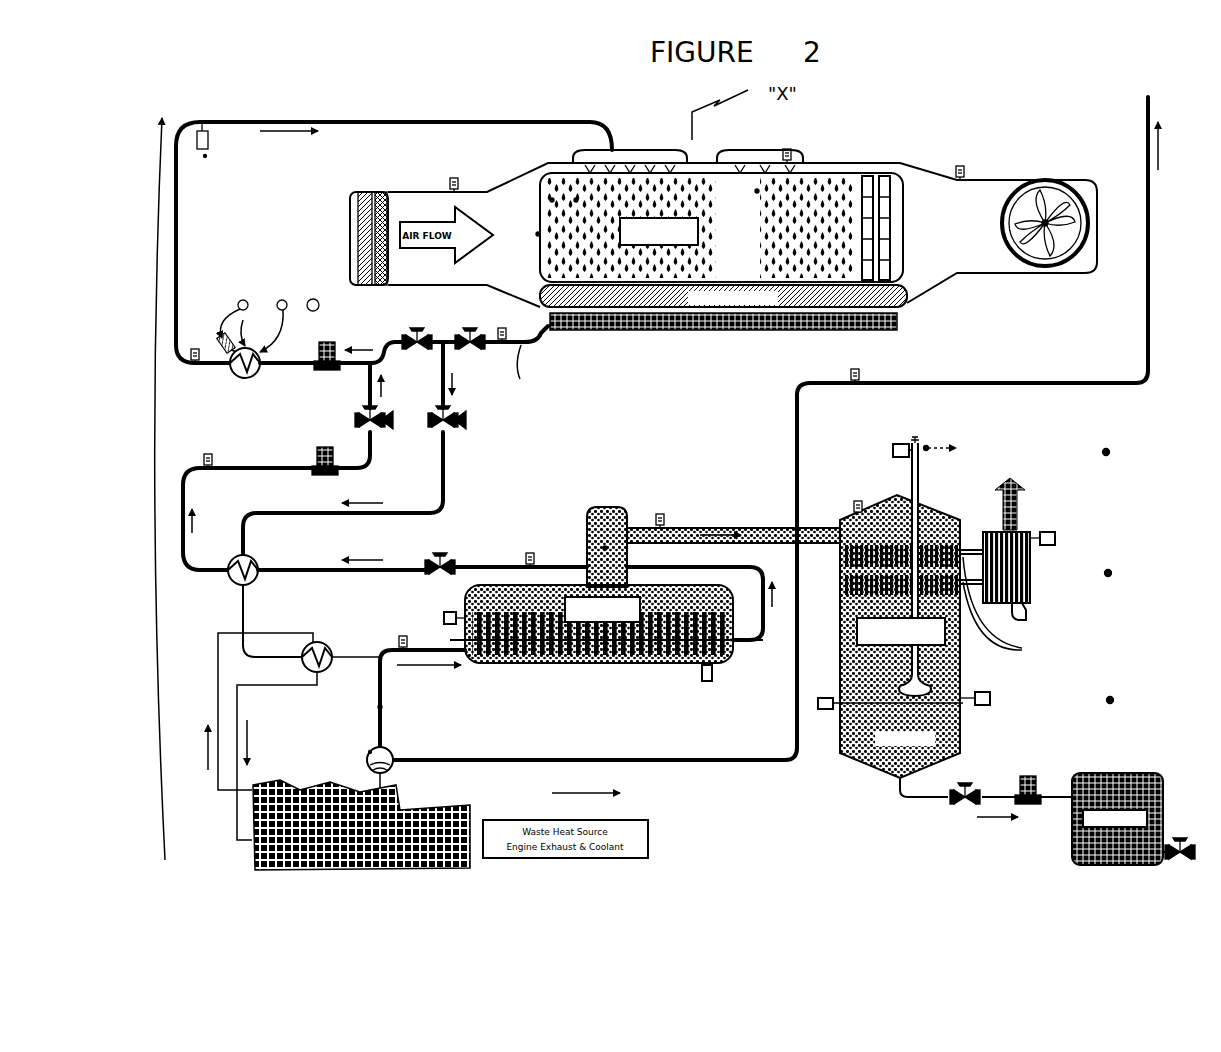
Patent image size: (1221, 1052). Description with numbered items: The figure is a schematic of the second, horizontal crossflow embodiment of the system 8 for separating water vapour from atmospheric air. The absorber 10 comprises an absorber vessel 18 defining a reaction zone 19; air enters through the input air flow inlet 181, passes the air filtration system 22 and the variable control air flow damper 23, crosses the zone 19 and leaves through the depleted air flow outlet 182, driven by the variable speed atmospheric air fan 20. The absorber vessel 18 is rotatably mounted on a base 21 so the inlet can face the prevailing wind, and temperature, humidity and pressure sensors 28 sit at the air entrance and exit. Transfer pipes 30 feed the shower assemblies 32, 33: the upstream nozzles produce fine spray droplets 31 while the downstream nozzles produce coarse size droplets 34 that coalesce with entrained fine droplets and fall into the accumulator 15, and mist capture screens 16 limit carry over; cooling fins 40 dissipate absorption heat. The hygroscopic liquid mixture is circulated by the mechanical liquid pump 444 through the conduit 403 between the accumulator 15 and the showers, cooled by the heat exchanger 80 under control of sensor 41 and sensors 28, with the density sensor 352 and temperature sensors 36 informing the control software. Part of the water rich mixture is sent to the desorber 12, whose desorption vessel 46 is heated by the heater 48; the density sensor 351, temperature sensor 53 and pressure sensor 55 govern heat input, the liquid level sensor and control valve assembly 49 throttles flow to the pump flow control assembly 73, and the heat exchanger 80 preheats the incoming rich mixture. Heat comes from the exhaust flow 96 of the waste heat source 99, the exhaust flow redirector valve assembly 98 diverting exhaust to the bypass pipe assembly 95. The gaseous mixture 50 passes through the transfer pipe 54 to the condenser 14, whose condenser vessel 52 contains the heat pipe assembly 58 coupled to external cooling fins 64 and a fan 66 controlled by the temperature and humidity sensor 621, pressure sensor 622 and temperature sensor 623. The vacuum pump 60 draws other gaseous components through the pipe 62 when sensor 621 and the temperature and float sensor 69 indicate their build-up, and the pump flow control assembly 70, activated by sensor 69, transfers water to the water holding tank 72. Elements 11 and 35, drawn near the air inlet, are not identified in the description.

The system 8 is at (157, 489).
The absorber 10 is at (855, 161).
The sensor 11 is at (394, 242).
The desorber 12 is at (598, 505).
The condenser 14 is at (896, 494).
The accumulator 15 is at (656, 300).
The mist capture screens 16 is at (885, 183).
The absorber vessel 18 is at (534, 234).
The reaction zone 19 is at (549, 199).
The atmospheric air fan 20 is at (1048, 200).
The base 21 is at (737, 333).
The air filtration system 22 is at (380, 190).
The variable control air flow damper 23 is at (366, 190).
The temperature, humidity and pressure sensors 28 is at (453, 176).
The transfer pipes 30 is at (642, 150).
The fine spray droplets 31 is at (564, 194).
The shower assembly 32 is at (574, 198).
The shower assembly 33 is at (765, 179).
The coarse size droplets 34 is at (754, 191).
The sensor 35 is at (206, 157).
The temperature sensors 36 is at (403, 633).
The cooling fins 40 is at (265, 323).
The sensor 41 is at (235, 308).
The desorption vessel 46 is at (568, 583).
The heater 48 is at (560, 658).
The liquid level sensor and control valve assembly 49 is at (449, 611).
The gaseous mixture 50 is at (606, 545).
The condenser vessel 52 is at (964, 655).
The temperature sensor 53 is at (701, 676).
The transfer pipe 54 is at (757, 526).
The pressure sensor 55 is at (661, 512).
The heat pipe assembly 58 is at (1026, 648).
The vacuum pump 60 is at (232, 560).
The pipe 62 is at (925, 470).
The external cooling fins 64 is at (1034, 568).
The fan 66 is at (1028, 614).
The temperature and float sensor 69 is at (826, 712).
The pump flow control assembly 70 is at (1030, 771).
The water holding tank 72 is at (1118, 772).
The pump flow control assembly 73 is at (325, 445).
The heat exchanger 80 is at (328, 646).
The bypass pipe assembly 95 is at (590, 752).
The exhaust flow 96 is at (376, 707).
The exhaust flow redirector valve assembly 98 is at (369, 752).
The engine 99 is at (341, 796).
The input air flow inlet 181 is at (348, 245).
The depleted air flow outlet 182 is at (1100, 242).
The density sensor 351 is at (529, 553).
The density sensor 352 is at (503, 326).
The conduit 403 is at (531, 378).
The mechanical liquid pump 444 is at (327, 340).
The temperature and humidity sensor 621 is at (992, 698).
The pressure sensor 622 is at (853, 498).
The temperature sensor 623 is at (1056, 537).